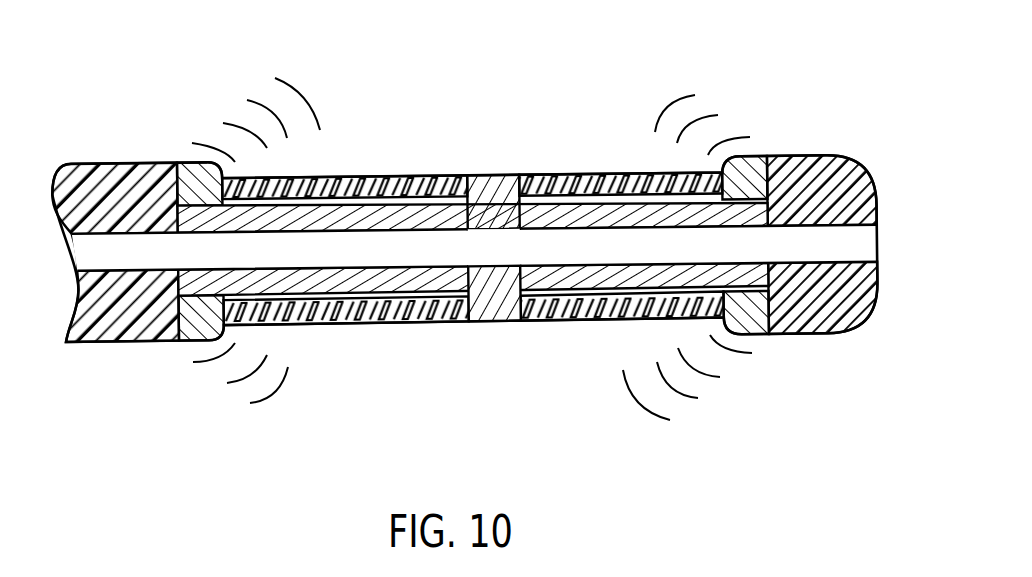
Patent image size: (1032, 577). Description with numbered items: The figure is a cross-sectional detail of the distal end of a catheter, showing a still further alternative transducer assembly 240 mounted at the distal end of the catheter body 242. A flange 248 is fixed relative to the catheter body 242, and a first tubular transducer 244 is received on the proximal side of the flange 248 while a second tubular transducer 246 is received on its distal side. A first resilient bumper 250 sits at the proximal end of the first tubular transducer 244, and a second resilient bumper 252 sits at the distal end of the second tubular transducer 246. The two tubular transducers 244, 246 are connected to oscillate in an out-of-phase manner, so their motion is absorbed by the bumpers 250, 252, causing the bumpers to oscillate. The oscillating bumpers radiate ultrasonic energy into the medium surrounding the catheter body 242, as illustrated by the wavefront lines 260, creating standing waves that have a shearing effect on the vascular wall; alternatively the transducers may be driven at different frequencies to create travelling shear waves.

The transducer assembly 240 is at (781, 96).
The catheter body 242 is at (117, 343).
The first tubular transducer 244 is at (385, 172).
The second tubular transducer 246 is at (552, 327).
The flange 248 is at (495, 172).
The first resilient bumper 250 is at (182, 165).
The second resilient bumper 252 is at (763, 335).
The wavefront lines 260 is at (240, 125).